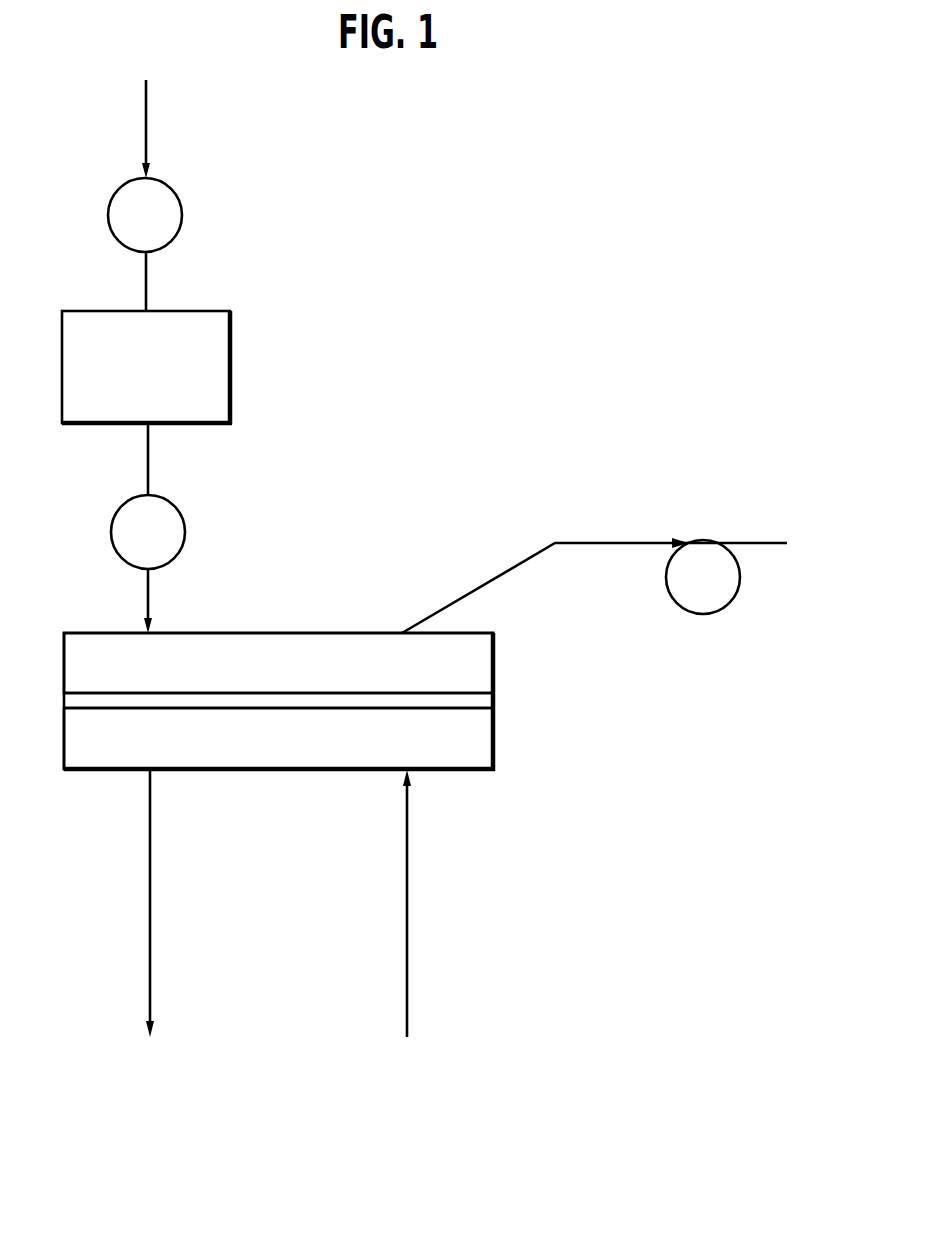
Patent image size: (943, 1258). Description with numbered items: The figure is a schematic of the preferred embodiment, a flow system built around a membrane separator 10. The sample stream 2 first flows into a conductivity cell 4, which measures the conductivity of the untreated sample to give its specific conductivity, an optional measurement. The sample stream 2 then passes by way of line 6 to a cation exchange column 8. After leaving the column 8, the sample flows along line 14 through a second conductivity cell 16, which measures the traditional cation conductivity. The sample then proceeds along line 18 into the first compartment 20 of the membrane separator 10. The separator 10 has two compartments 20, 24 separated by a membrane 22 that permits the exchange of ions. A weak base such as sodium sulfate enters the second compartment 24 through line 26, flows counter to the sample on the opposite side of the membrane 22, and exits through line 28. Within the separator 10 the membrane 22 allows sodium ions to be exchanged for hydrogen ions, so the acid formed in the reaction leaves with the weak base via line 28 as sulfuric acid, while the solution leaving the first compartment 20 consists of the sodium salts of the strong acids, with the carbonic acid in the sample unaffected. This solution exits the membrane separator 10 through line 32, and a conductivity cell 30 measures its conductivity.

The sample stream 2 is at (146, 98).
The conductivity cell 4 is at (170, 184).
The line 6 is at (147, 273).
The cation exchange column 8 is at (232, 372).
The membrane separator 10 is at (528, 655).
The conduit 14 is at (149, 461).
The conductivity cell 16 is at (181, 520).
The line 18 is at (149, 591).
The first compartment 20 is at (494, 677).
The membrane 22 is at (494, 703).
The second compartment 24 is at (494, 730).
The line 26 is at (408, 886).
The line 28 is at (151, 890).
The conductivity cell 30 is at (703, 614).
The line 32 is at (621, 545).